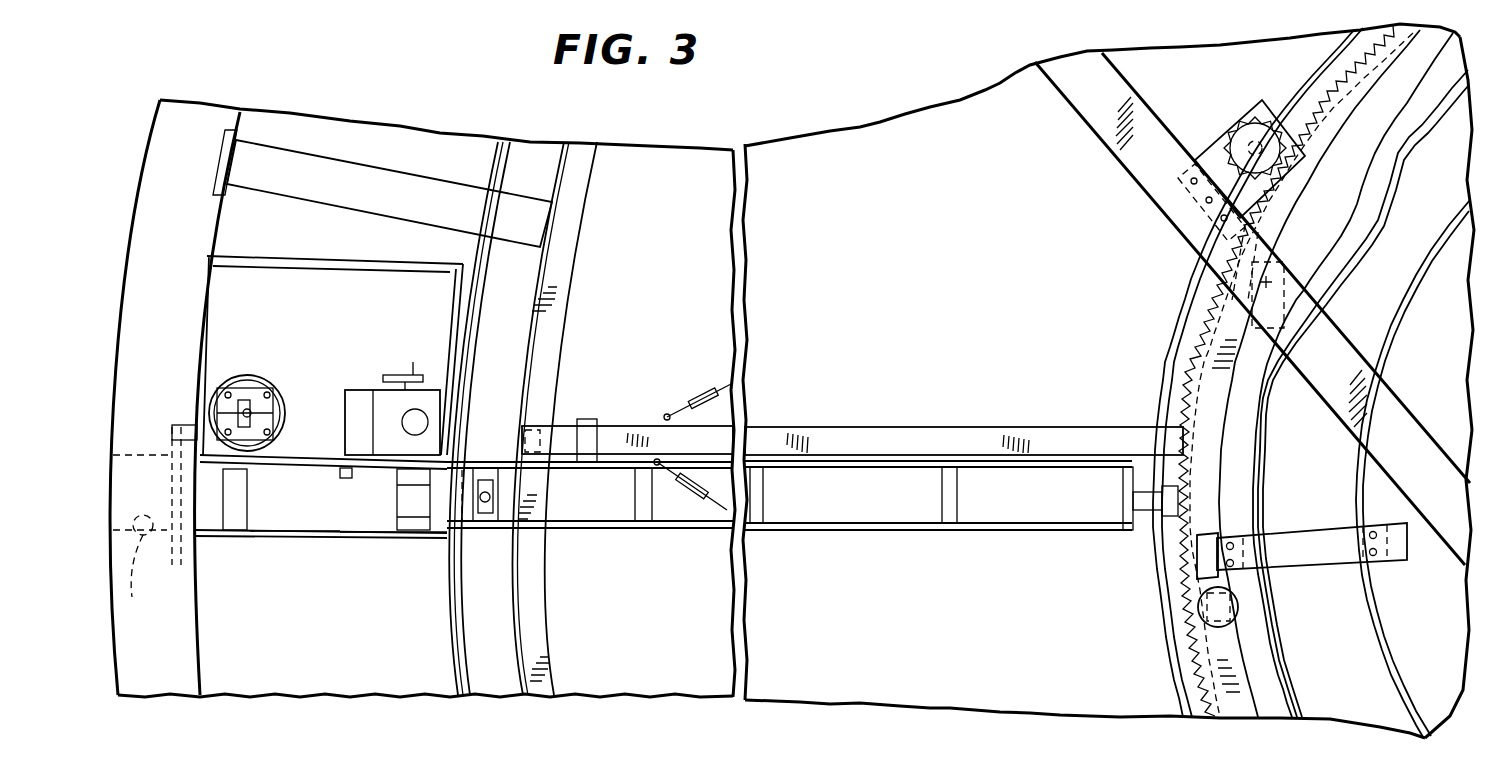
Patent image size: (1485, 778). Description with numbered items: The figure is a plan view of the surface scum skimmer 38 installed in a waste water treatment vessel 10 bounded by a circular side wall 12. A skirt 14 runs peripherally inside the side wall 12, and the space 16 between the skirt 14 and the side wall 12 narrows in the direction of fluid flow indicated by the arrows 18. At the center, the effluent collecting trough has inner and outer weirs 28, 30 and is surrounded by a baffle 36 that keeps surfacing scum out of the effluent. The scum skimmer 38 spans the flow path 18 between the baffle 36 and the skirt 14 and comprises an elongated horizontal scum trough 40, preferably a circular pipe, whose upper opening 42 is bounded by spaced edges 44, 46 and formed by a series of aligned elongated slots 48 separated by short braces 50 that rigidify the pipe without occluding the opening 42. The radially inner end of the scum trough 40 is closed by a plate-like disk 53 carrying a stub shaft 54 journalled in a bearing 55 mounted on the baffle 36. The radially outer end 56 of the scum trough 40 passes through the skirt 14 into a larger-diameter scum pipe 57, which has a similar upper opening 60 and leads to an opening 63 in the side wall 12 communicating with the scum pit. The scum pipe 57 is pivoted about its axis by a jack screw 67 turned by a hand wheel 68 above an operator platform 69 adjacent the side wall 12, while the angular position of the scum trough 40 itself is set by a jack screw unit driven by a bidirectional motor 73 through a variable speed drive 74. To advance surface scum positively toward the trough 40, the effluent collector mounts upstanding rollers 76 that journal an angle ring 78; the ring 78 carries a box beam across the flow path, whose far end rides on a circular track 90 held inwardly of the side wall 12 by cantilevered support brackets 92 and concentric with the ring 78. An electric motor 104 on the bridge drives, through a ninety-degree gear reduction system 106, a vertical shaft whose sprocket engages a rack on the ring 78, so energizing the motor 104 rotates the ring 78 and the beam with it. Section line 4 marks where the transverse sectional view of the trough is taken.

The vessel 10 is at (277, 140).
The circular side wall 12 is at (221, 219).
The skirt 14 is at (452, 628).
The space 16 is at (295, 635).
The arrows 18 is at (945, 318).
The inner weir 28 is at (1377, 637).
The outer weir 30 is at (1273, 640).
The baffle 36 is at (1175, 347).
The surface scum skimmer 38 is at (829, 537).
The scum trough 40 is at (598, 503).
The upper opening 42 is at (997, 507).
The edge 44 is at (792, 530).
The edge 46 is at (847, 473).
The elongated slots 48 is at (680, 500).
The braces 50 is at (233, 527).
The plate-like disk 53 is at (1140, 517).
The stub shaft 54 is at (1140, 487).
The bearing 55 is at (1215, 497).
The radially outer end 56 is at (473, 467).
The scum pipe 57 is at (387, 533).
The upper opening 60 is at (310, 512).
The opening 63 is at (155, 524).
The jack screw 67 is at (248, 400).
The hand wheel 68 is at (237, 377).
The operator platform 69 is at (392, 335).
The bidirectional motor 73 is at (400, 493).
The variable speed drive 74 is at (432, 390).
The rollers 76 is at (1265, 300).
The angle ring 78 is at (1215, 408).
The circular track 90 is at (564, 216).
The cantilevered support brackets 92 is at (337, 173).
The electric motor 104 is at (1283, 228).
The 90° gear reduction system 106 is at (1262, 192).
The section line 4- 4 is at (885, 418).